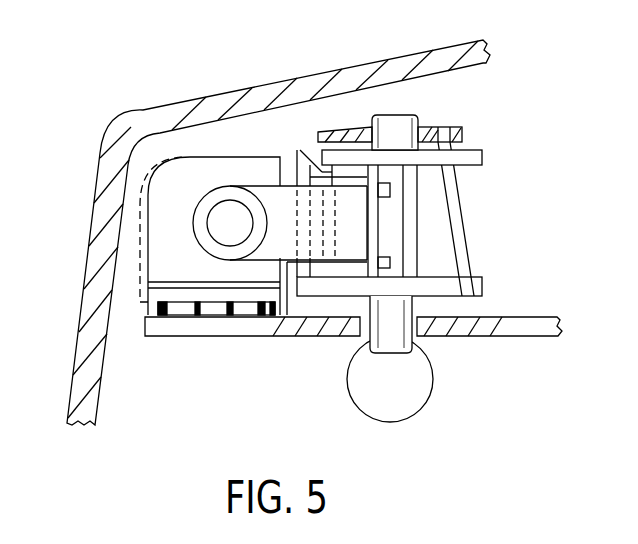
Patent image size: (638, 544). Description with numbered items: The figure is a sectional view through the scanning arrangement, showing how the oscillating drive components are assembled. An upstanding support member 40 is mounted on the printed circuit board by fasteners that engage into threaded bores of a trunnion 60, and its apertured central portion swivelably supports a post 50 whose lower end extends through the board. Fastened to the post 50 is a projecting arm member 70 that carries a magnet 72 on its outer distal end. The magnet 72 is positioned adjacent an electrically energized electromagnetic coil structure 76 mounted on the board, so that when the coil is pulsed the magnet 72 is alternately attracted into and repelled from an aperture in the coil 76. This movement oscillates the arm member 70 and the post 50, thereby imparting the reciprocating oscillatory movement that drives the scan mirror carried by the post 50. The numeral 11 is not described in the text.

The housing wall 11 is at (142, 111).
The electromagnetic coil structure 76 is at (160, 185).
The arm member 70 is at (283, 260).
The magnet 72 is at (230, 236).
The support member 40 is at (347, 223).
The post 50 is at (420, 122).
The trunnion 60 is at (427, 403).